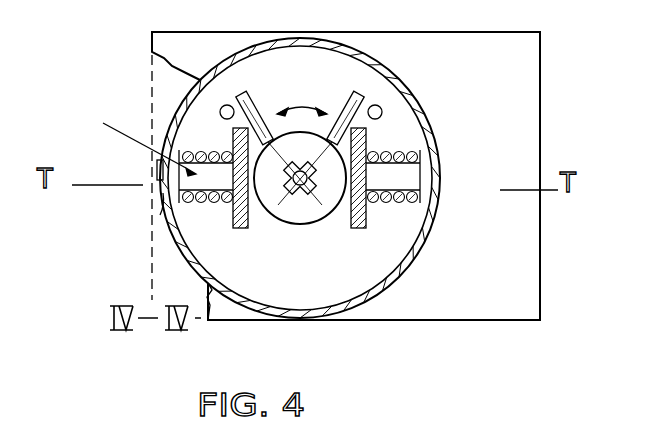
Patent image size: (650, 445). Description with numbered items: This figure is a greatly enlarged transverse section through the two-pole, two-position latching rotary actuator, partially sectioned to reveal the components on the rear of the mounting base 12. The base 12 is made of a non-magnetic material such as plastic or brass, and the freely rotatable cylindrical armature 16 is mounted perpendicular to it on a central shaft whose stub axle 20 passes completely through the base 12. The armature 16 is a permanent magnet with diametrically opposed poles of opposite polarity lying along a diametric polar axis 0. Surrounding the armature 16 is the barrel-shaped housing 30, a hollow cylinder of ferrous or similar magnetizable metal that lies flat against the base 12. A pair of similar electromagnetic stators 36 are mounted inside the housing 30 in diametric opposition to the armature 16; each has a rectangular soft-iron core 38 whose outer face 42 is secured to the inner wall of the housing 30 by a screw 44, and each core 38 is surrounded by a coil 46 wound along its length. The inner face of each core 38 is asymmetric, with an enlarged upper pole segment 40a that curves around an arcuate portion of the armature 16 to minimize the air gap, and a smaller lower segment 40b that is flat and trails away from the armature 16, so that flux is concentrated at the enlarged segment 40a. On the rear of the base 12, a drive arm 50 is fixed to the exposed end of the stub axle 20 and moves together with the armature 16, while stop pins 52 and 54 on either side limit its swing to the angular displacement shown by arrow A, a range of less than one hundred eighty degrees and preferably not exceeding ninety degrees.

The mounting base 12 is at (398, 250).
The cylindrical armature 16 is at (315, 202).
The stub axle 20 is at (290, 193).
The diametric polar axis 0 is at (295, 187).
The barrel-shaped housing 30 is at (442, 188).
The electromagnetic stator 36 is at (412, 175).
The rectangular core 38 is at (207, 200).
The enlarged upper pole segment 40a is at (253, 107).
The smaller lower segment 40b is at (243, 225).
The outer face 42 is at (163, 193).
The screw 44 is at (157, 168).
The coil 46 is at (190, 150).
The drive arm 50 is at (257, 113).
The stop pin 52 is at (223, 106).
The stop pin 54 is at (381, 107).
The arrow indicating angular displacement A is at (305, 112).